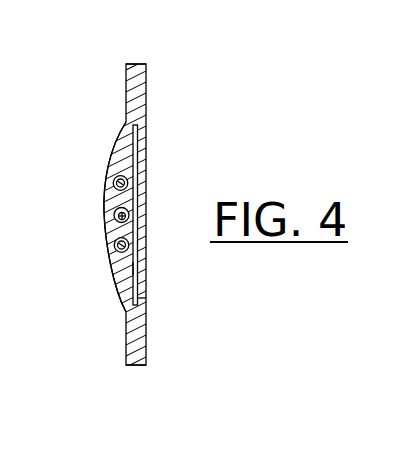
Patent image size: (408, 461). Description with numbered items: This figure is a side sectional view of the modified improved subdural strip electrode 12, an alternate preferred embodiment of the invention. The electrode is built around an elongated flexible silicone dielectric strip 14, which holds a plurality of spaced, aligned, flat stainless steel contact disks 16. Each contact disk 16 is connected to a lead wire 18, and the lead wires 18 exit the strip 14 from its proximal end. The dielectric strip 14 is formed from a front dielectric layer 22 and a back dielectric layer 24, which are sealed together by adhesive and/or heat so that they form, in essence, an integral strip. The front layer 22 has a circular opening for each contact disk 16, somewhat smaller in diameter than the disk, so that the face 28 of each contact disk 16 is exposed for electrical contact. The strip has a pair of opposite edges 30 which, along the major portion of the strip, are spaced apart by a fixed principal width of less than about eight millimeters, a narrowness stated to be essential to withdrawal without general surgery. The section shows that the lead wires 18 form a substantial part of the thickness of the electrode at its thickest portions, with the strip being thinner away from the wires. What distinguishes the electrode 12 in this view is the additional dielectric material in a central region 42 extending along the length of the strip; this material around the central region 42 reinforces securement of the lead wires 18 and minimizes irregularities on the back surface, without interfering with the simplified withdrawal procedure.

The modified improved subdural strip electrode 12 is at (245, 143).
The dielectric strip 14 is at (133, 103).
The contact disk 16 is at (134, 152).
The lead wire 18 is at (111, 179).
The front dielectric layer 22 is at (140, 303).
The back dielectric layer 24 is at (120, 295).
The face of contact disk 28 is at (133, 268).
The opposite edges 30 is at (138, 62).
The central region 42 is at (107, 201).